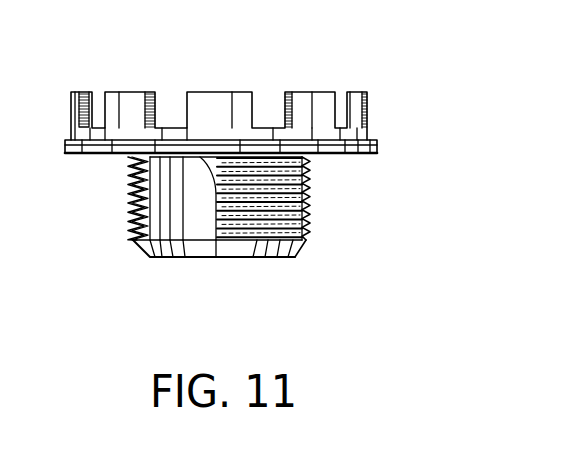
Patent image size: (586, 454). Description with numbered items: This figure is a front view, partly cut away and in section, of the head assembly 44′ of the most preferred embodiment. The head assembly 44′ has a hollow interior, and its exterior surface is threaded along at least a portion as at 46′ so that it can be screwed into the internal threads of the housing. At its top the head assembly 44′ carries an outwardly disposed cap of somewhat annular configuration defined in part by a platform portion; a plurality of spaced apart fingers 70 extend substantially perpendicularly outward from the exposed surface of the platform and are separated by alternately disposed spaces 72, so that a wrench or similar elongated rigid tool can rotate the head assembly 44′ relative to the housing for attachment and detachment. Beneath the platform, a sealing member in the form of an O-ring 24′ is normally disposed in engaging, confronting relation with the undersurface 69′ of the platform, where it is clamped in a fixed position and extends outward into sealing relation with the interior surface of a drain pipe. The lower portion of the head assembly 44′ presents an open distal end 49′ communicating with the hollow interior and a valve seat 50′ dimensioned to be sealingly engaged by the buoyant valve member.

The fingers 70 is at (113, 97).
The spaces 72 is at (268, 95).
The head assembly 44′ is at (382, 98).
The undersurface of the platform 69′ is at (367, 138).
The O-ring 24′ is at (377, 146).
The threaded exterior surface 46′ is at (305, 205).
The open distal end 49′ is at (198, 264).
The valve seat 50′ is at (255, 264).